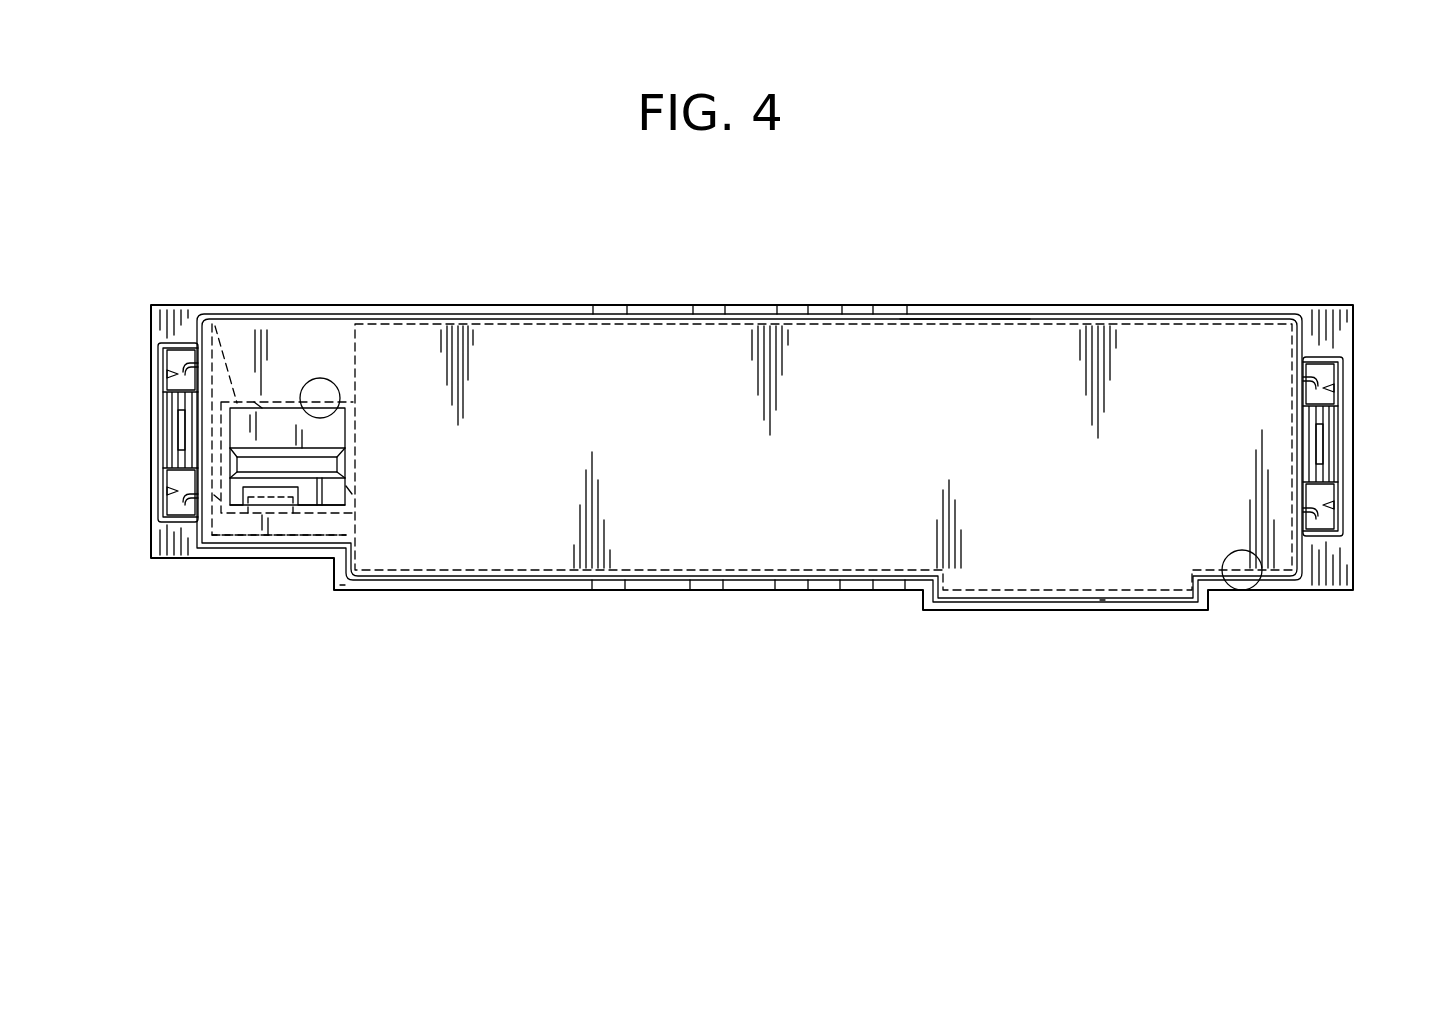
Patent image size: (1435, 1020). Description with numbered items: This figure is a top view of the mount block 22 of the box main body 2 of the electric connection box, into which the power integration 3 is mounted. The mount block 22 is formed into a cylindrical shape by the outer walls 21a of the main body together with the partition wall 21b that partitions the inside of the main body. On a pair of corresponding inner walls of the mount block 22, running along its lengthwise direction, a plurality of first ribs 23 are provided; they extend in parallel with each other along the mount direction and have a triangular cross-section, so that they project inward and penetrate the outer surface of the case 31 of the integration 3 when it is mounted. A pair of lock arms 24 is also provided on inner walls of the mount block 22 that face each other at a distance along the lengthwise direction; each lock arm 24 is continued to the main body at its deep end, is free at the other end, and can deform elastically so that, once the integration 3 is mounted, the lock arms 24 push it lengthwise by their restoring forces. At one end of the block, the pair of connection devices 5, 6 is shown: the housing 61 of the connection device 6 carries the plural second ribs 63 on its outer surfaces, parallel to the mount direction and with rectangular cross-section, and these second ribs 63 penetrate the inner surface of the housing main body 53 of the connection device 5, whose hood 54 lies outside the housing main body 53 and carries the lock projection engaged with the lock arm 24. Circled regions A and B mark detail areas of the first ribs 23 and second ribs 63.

The box main body 2 is at (1360, 320).
The mount block 22 is at (1323, 302).
The outer wall 21a is at (1236, 304).
The partition wall 21b is at (150, 441).
The power integration 3 is at (850, 322).
The case 31 is at (964, 318).
The first rib 23 is at (284, 322).
The lock arm 24 is at (182, 404).
The connection device 5 is at (250, 322).
The housing main body 53 is at (210, 322).
The hood 54 is at (241, 546).
The housing 61 is at (308, 490).
The connection device 6 is at (320, 512).
The second rib 63 is at (258, 405).
The detail region A is at (333, 384).
The detail region B is at (1236, 552).